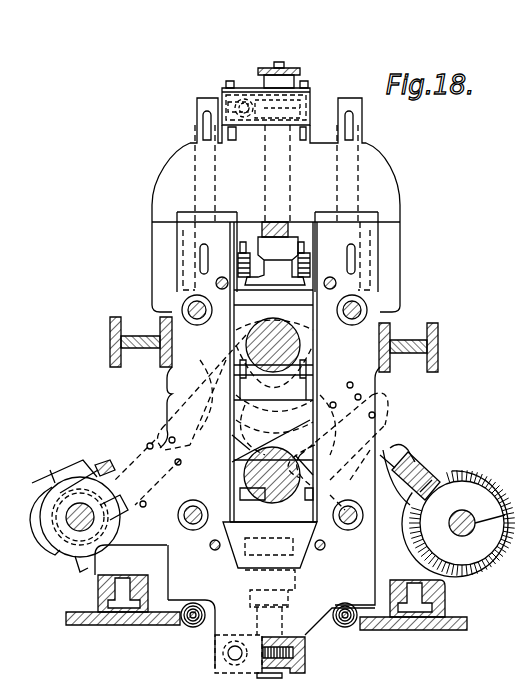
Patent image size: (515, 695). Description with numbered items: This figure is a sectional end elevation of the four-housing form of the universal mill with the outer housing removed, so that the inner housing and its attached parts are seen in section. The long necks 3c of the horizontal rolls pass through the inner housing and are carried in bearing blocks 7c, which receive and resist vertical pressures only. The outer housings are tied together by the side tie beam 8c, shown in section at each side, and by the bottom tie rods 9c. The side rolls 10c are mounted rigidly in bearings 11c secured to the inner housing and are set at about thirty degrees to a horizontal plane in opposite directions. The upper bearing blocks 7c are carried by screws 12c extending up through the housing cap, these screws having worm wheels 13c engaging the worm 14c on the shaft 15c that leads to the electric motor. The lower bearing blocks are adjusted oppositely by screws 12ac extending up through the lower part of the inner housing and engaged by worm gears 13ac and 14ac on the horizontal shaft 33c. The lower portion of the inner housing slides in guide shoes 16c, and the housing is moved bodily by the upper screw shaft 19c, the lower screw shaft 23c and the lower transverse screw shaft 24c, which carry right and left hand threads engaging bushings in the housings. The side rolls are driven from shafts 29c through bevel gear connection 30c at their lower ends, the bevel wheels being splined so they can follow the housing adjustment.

The long necks of horizontal rolls 3c is at (273, 372).
The bearing blocks of inner housings 7c is at (272, 330).
The side tie beam 8c is at (110, 348).
The bottom tie rods 9c is at (193, 627).
The side rolls 10c is at (225, 395).
The bearings for side rolls 11c is at (175, 385).
The screws 12c is at (290, 196).
The screws 12ac is at (280, 626).
The worm wheels 13c is at (312, 102).
The worm gears 13ac is at (296, 655).
The worm 14c is at (233, 90).
The worm gears 14ac is at (235, 662).
The shaft 15c is at (222, 93).
The guide shoes 16c is at (452, 603).
The screw shaft 19c is at (368, 308).
The screw shaft 23c is at (348, 528).
The lower transverse screw shaft 24c is at (195, 527).
The shafts 29c is at (75, 522).
The bevel gear connection 30c is at (103, 462).
The horizontal shaft 33c is at (230, 655).